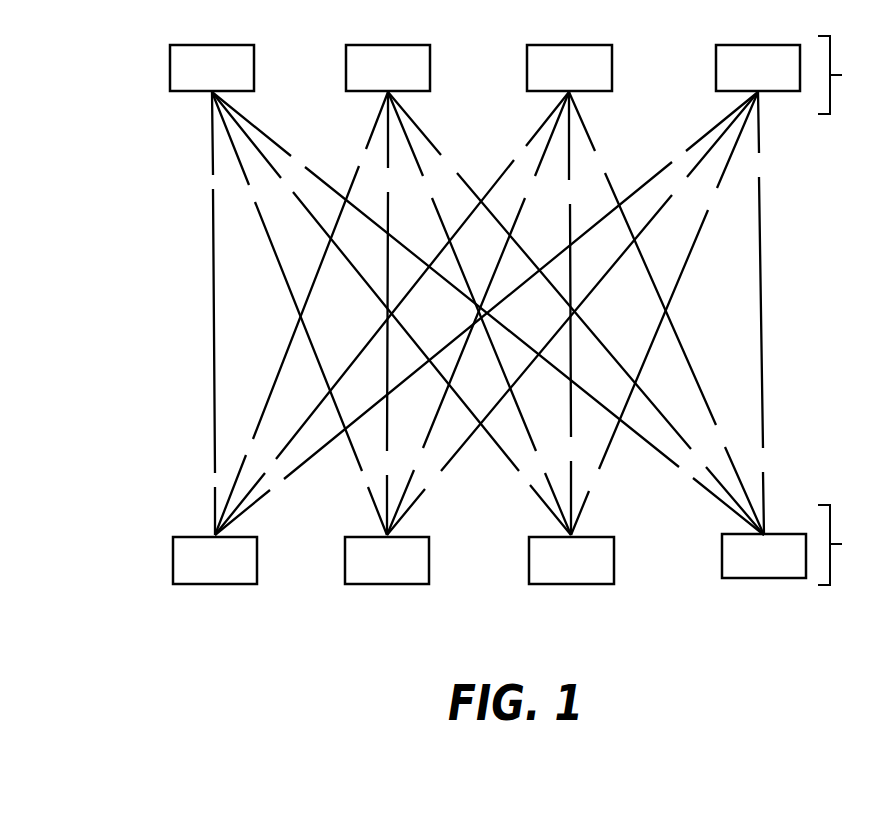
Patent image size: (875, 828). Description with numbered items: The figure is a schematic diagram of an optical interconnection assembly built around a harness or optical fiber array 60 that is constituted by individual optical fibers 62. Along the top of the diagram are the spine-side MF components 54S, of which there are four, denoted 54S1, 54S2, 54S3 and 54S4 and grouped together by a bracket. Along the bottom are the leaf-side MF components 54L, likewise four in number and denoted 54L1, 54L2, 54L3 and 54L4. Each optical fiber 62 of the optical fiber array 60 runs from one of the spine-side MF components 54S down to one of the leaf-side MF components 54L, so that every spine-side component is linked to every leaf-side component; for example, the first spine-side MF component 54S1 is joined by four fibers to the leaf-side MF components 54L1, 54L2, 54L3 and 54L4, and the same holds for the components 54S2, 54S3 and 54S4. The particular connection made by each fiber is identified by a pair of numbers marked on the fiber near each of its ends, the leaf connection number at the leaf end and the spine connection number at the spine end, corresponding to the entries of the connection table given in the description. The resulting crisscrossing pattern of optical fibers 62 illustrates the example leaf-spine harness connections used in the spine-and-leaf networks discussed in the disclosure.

The spine-side MF components 54S is at (163, 40).
The first spine-side MF component 54S1 is at (212, 68).
The second spine-side MF component 54S2 is at (388, 68).
The third spine-side MF component 54S3 is at (569, 68).
The fourth spine-side MF component 54S4 is at (758, 68).
The leaf-side MF components 54L is at (163, 522).
The first leaf-side MF component 54L1 is at (215, 560).
The second leaf-side MF component 54L2 is at (387, 560).
The third leaf-side MF component 54L3 is at (571, 560).
The fourth leaf-side MF component 54L4 is at (764, 556).
The optical fiber array 60 is at (168, 319).
The optical fibers 62 is at (265, 408).